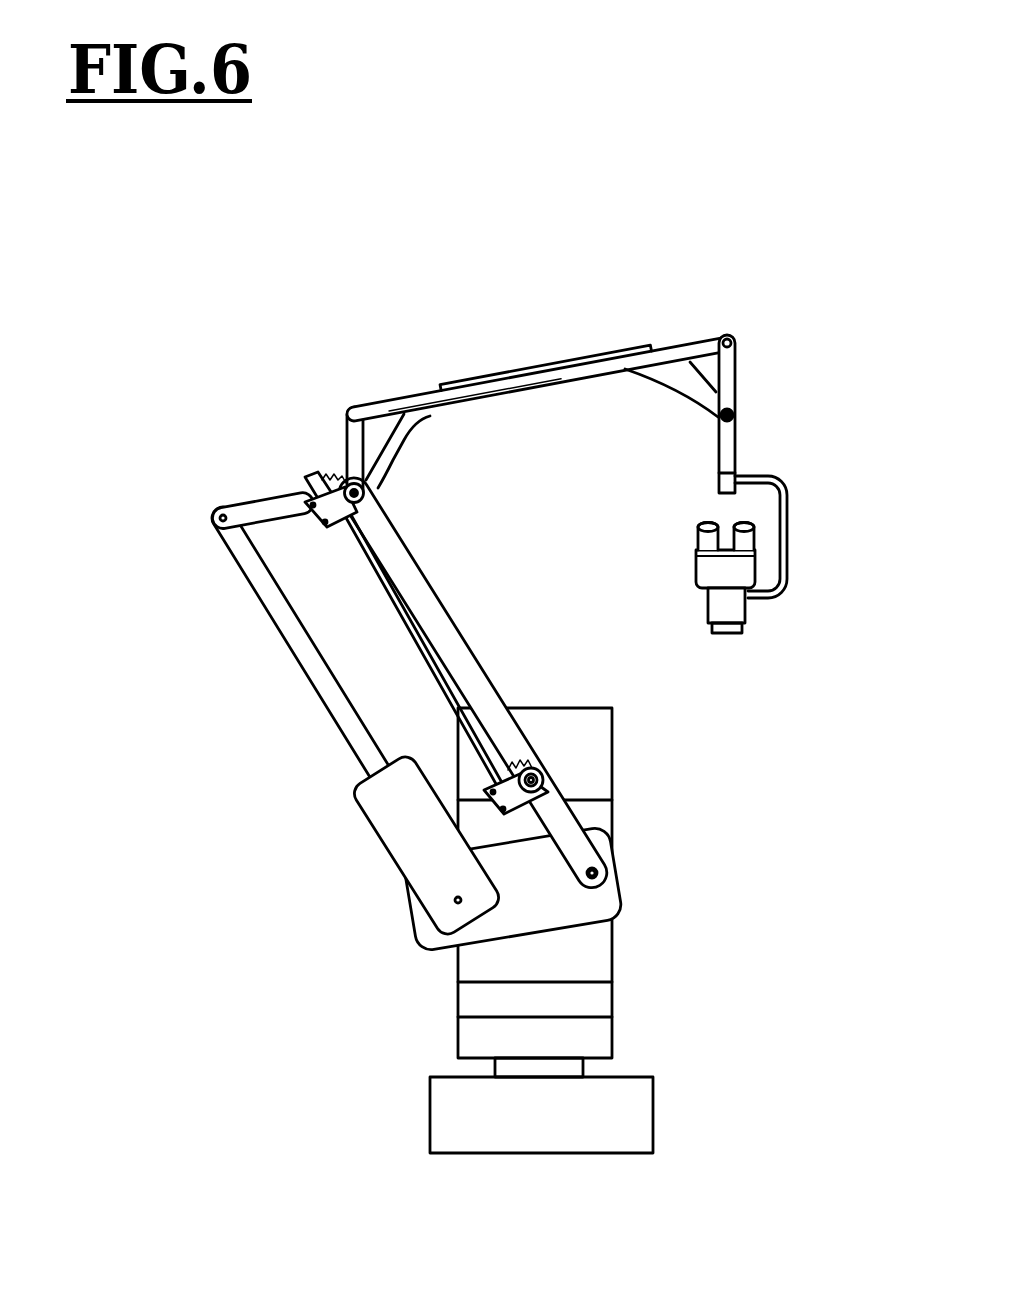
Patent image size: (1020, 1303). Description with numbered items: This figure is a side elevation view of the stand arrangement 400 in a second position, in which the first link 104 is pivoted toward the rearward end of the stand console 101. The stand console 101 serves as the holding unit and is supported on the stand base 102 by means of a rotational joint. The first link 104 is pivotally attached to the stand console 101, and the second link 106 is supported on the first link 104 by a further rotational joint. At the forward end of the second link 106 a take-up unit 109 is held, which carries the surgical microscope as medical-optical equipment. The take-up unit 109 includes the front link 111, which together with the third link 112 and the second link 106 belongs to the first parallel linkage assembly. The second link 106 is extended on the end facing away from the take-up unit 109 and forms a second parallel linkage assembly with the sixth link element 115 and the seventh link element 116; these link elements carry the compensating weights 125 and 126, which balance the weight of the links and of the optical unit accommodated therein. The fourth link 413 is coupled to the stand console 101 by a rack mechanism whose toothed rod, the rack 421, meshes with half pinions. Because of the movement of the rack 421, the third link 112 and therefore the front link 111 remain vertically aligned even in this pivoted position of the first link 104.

The stand arrangement 400 is at (697, 692).
The stand console 101 is at (587, 965).
The stand base 102 is at (633, 1125).
The first link 104 is at (447, 647).
The second link 106 is at (407, 450).
The take-up unit 109 is at (728, 456).
The front link 111 is at (728, 364).
The third link 112 is at (400, 405).
The sixth link element 115 is at (265, 597).
The seventh link element 116 is at (518, 913).
The compensating weight 125 is at (383, 821).
The compensating weight 126 is at (603, 883).
The fourth link 413 is at (346, 440).
The rack 421 is at (393, 623).